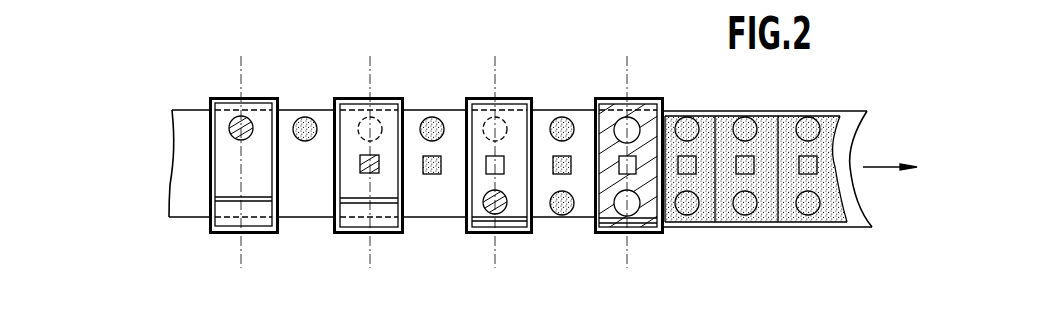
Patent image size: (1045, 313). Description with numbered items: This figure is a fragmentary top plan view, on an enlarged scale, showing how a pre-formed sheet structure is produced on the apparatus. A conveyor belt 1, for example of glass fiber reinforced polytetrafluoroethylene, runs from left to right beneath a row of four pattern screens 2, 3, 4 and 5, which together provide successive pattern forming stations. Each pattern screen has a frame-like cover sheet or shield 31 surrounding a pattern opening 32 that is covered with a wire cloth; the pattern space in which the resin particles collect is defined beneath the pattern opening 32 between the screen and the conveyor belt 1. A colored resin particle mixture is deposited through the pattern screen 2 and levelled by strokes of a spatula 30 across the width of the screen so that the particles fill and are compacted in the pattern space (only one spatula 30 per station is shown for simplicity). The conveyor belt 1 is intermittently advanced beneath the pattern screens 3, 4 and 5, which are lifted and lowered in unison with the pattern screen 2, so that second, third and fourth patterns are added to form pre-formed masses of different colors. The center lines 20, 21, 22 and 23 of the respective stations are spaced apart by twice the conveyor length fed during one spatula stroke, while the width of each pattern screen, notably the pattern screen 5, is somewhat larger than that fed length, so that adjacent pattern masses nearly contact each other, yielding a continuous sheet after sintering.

The conveyor belt 1 is at (182, 122).
The pattern screen 2 is at (261, 97).
The pattern screen 3 is at (381, 98).
The pattern screen 4 is at (506, 98).
The pattern screen 5 is at (638, 98).
The center line of first station 20 is at (241, 162).
The center line of second station 21 is at (370, 162).
The center line of third station 22 is at (495, 162).
The center line of fourth station 23 is at (627, 162).
The spatula 30 is at (268, 201).
The cover sheet or shield 31 is at (225, 168).
The pattern opening 32 is at (247, 138).